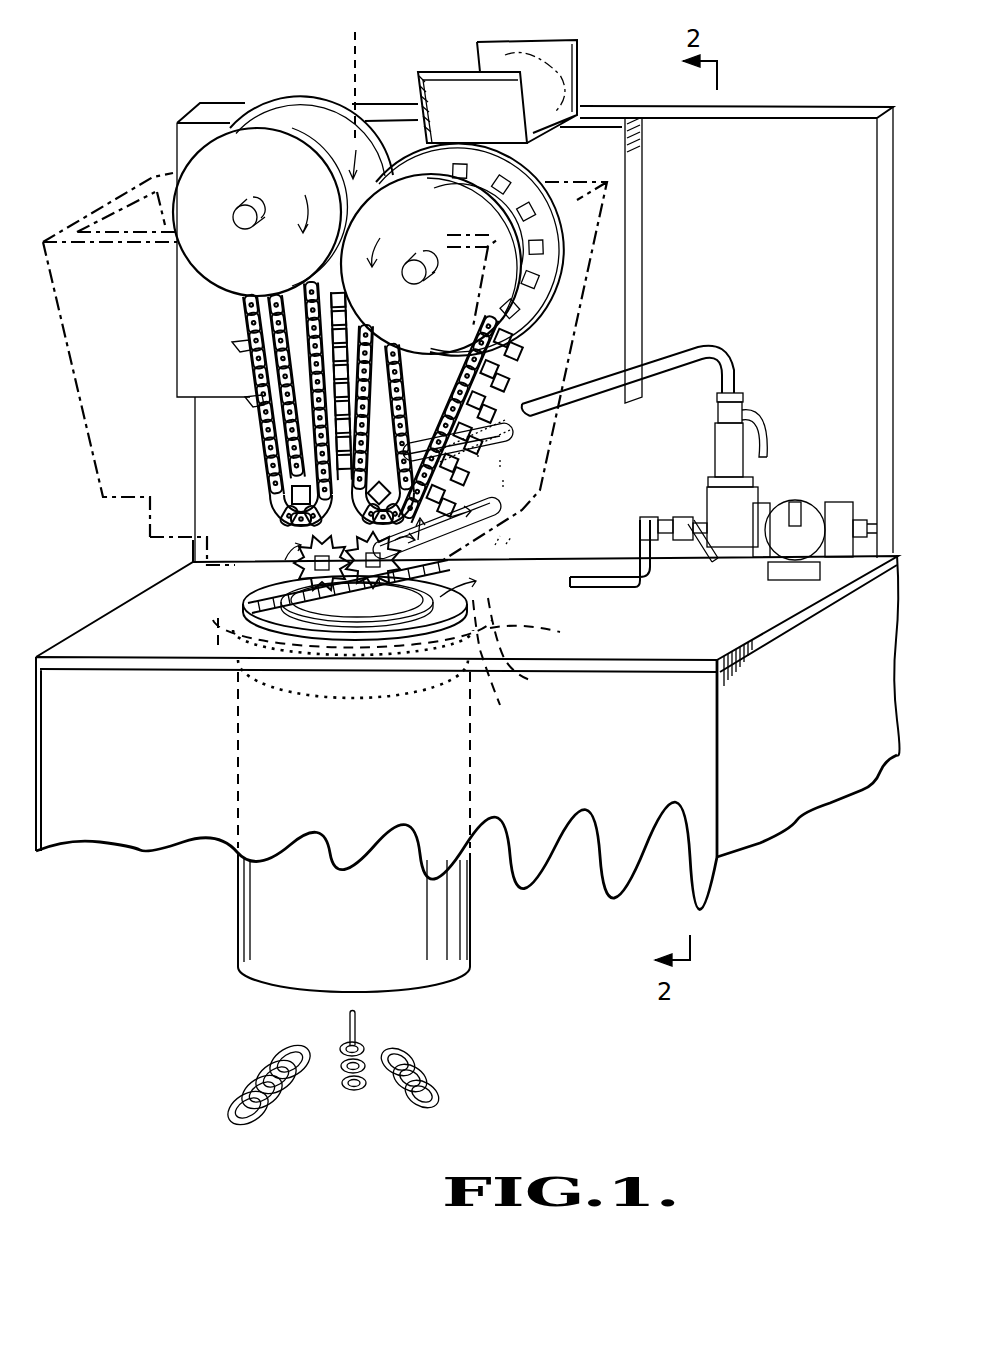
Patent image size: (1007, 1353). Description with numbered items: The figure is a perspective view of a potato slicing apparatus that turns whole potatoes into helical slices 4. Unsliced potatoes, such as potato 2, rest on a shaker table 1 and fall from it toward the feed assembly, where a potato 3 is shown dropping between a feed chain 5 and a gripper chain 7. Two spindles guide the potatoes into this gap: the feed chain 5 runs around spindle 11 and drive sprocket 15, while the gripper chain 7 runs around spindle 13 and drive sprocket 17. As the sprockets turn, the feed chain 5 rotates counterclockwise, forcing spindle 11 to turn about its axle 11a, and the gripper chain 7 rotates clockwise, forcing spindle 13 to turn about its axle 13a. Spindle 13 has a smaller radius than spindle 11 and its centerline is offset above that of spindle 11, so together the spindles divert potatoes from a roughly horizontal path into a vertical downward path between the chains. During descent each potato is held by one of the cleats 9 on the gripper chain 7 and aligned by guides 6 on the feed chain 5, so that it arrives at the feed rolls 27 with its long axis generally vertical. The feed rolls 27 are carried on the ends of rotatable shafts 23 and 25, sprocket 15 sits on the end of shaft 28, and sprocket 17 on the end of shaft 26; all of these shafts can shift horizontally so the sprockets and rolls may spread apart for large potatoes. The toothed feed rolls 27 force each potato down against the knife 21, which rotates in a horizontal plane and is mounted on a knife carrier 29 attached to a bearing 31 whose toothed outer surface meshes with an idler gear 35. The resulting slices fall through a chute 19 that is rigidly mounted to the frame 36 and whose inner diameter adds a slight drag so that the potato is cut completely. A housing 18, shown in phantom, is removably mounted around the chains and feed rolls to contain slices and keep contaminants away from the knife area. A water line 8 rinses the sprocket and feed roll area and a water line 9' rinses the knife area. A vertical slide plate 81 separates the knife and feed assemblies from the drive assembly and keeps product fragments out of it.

The shaker table 1 is at (483, 45).
The potato 2 is at (548, 60).
The potato 3 is at (350, 100).
The helical slices 4 is at (400, 1060).
The feed chain 5 is at (515, 338).
The guides 6 is at (505, 360).
The gripper chain 7 is at (243, 314).
The water line 8 is at (705, 350).
The cleats 9 is at (263, 386).
The water line 9' is at (644, 552).
The spindle 11 is at (527, 168).
The axle 11a is at (424, 285).
The spindle 13 is at (192, 170).
The axle 13a is at (252, 229).
The drive sprocket 15 is at (470, 495).
The drive sprocket 17 is at (270, 495).
The housing 18 is at (110, 355).
The chute 19 is at (250, 936).
The knife 21 is at (500, 590).
The rotatable shaft 23 is at (352, 524).
The rotatable shaft 25 is at (498, 528).
The rotatable shaft 26 is at (403, 418).
The feed rolls 27 is at (290, 570).
The rotatable shaft 28 is at (518, 445).
The knife carrier 29 is at (227, 606).
The bearing 31 is at (490, 700).
The idler gear 35 is at (525, 680).
The frame 36 is at (753, 623).
The slide plate 81 is at (175, 537).